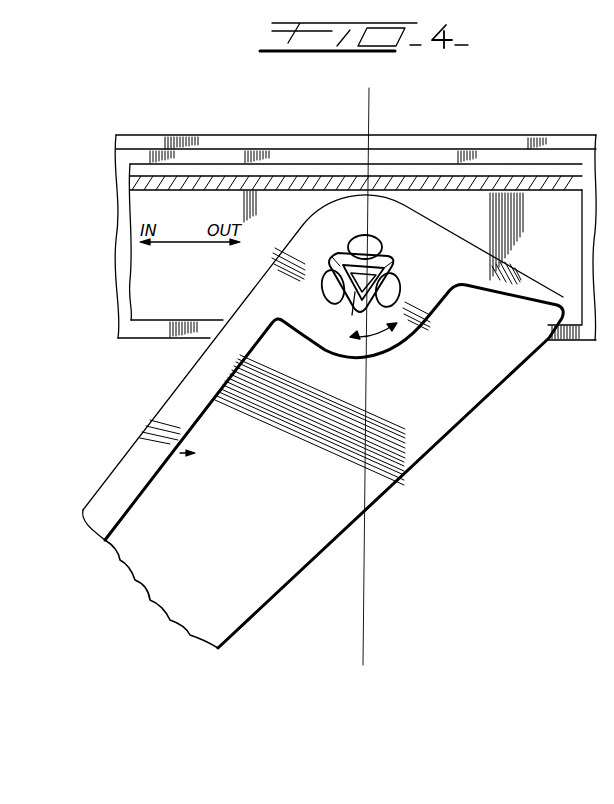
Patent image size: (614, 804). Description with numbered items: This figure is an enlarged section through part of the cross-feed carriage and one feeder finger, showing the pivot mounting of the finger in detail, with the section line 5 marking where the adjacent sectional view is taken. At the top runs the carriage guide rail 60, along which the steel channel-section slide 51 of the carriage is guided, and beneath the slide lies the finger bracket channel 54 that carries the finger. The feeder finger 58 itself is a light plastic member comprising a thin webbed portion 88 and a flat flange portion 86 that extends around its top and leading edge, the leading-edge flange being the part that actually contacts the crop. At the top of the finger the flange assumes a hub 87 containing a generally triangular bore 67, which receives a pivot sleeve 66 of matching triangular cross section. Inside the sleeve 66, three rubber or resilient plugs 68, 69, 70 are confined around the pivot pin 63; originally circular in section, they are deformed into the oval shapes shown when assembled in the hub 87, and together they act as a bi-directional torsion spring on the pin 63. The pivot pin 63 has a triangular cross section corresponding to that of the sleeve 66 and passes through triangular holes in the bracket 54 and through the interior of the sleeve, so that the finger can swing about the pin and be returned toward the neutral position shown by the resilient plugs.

The section line 5- 5 is at (317, 652).
The slide 51 is at (137, 171).
The finger bracket channel 54 is at (138, 180).
The feeder finger 58 is at (170, 435).
The carriage guide rail 60 is at (468, 146).
The pivot pin 63 is at (352, 314).
The pivot sleeve 66 is at (332, 258).
The triangular bore 67 is at (393, 264).
The resilient plug 68 is at (326, 288).
The resilient plug 69 is at (399, 292).
The resilient plug 70 is at (372, 246).
The flange portion 86 is at (127, 472).
The hub 87 is at (443, 241).
The webbed portion 88 is at (417, 422).